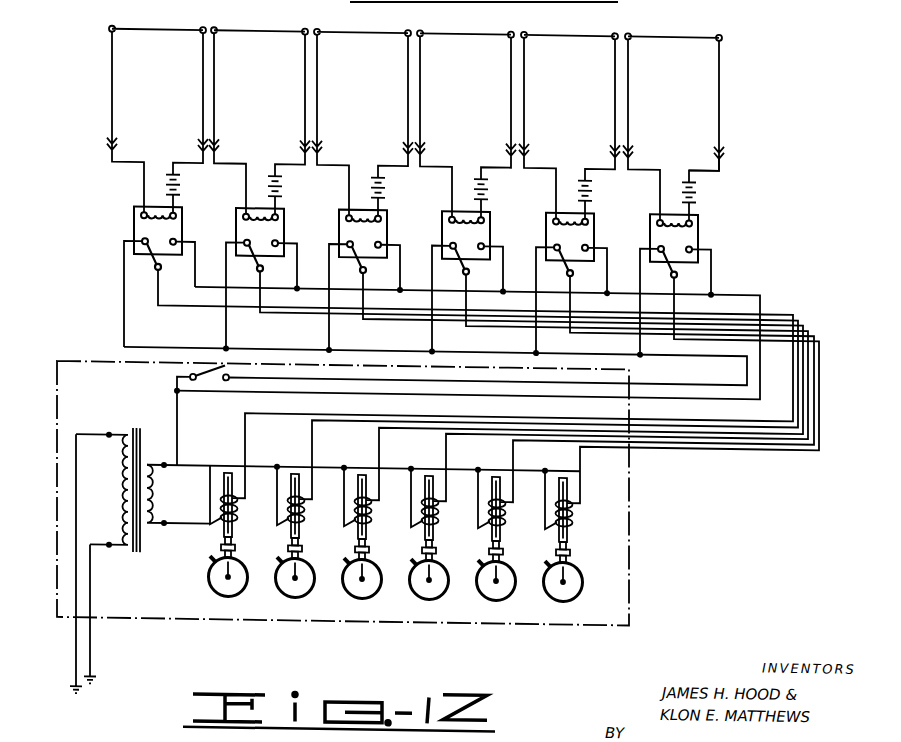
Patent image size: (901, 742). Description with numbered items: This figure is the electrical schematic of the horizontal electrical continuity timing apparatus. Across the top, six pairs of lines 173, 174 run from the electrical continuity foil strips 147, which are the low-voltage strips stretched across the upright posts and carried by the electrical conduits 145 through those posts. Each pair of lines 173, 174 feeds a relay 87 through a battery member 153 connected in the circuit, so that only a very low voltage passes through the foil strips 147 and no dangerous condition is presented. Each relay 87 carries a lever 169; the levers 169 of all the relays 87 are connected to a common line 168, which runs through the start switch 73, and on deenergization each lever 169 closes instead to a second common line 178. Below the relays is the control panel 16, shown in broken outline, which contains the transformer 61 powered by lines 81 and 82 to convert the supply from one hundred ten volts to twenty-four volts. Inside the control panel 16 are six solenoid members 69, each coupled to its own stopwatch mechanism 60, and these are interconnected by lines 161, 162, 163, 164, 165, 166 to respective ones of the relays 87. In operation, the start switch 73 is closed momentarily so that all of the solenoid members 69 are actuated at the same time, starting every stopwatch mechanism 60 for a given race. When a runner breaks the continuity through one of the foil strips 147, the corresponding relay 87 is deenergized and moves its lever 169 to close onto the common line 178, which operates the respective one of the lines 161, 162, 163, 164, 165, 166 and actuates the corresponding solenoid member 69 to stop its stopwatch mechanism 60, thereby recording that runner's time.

The electrical continuity foil strips 147 is at (155, 29).
The line 173 is at (114, 75).
The line 174 is at (202, 93).
The electrical conduits 145 is at (723, 159).
The battery member 153 is at (180, 186).
The relay 87 is at (183, 229).
The lever 169 is at (150, 257).
The common line 178 is at (200, 286).
The common line 168 is at (124, 312).
The line 161 is at (246, 437).
The line 162 is at (313, 442).
The line 163 is at (380, 447).
The line 164 is at (447, 451).
The line 165 is at (514, 457).
The line 166 is at (581, 461).
The start switch 73 is at (207, 368).
The transformer 61 is at (150, 452).
The line 81 is at (76, 650).
The line 82 is at (92, 647).
The solenoid member 69 is at (222, 517).
The stopwatch mechanism 60 is at (300, 594).
The control panel 16 is at (633, 547).